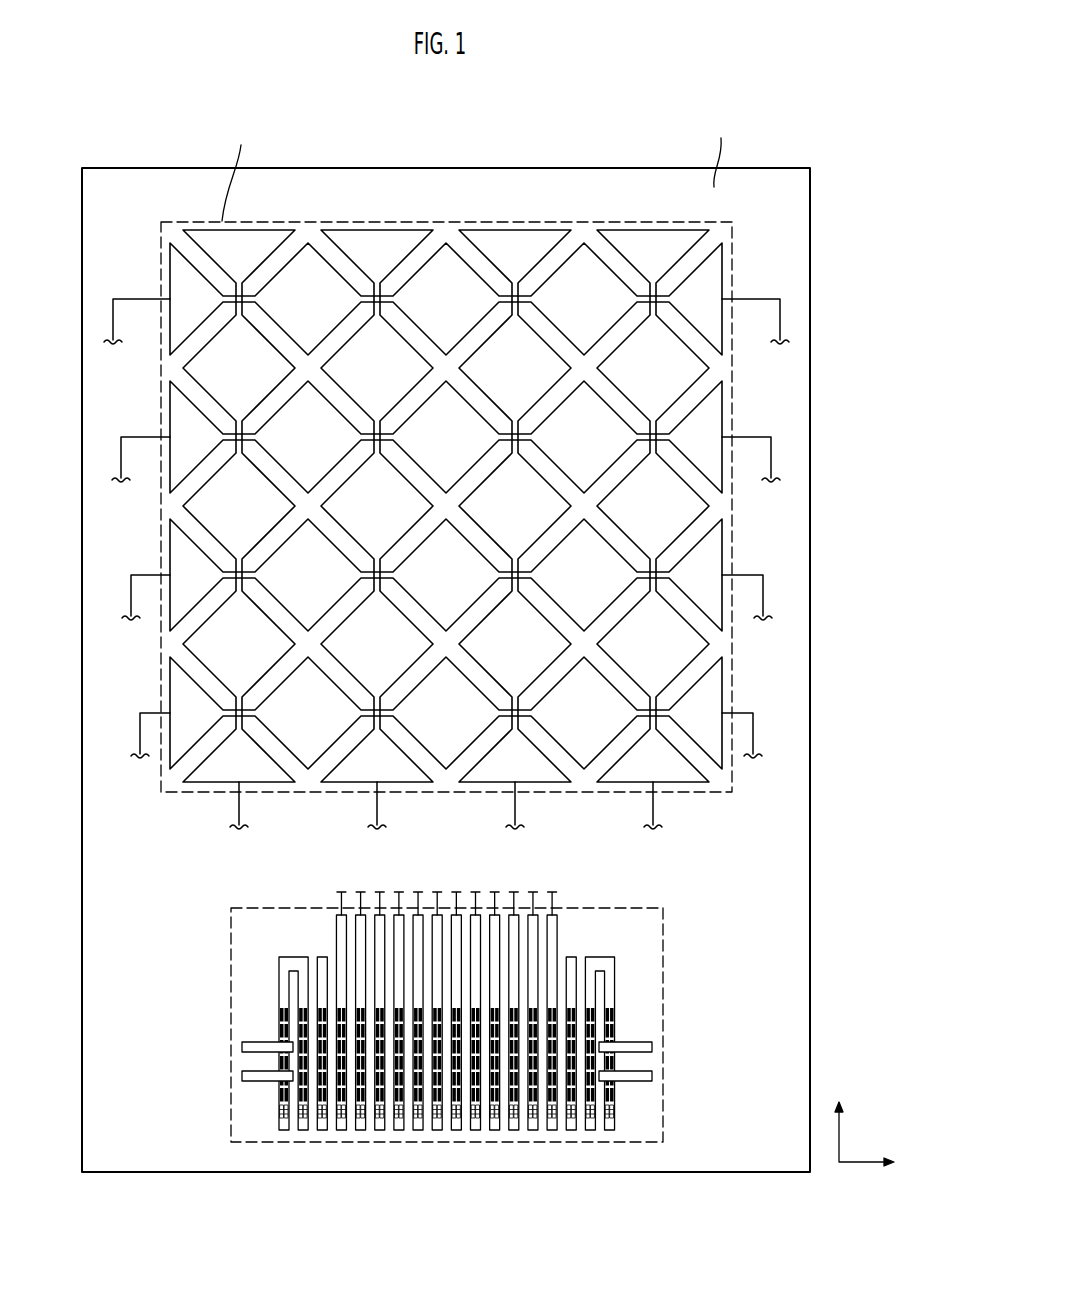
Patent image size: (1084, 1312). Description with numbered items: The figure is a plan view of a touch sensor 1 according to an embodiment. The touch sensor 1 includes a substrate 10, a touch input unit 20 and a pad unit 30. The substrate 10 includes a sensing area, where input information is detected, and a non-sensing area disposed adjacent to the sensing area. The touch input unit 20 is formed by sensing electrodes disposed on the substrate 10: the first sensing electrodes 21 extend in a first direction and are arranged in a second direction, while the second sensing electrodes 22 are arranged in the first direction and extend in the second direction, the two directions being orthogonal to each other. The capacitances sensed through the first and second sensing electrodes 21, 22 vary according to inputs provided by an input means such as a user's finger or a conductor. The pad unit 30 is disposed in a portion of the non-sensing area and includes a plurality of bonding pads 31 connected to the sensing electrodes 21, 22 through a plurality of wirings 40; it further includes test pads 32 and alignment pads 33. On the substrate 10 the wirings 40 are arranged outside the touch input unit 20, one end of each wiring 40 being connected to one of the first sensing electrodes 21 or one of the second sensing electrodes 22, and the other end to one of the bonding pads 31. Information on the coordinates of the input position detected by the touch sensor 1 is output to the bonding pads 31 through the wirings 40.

The touch sensor 1 is at (84, 99).
The substrate 10 is at (810, 206).
The touch input unit 20 is at (529, 450).
The first sensing electrodes 21 is at (713, 413).
The second sensing electrodes 22 is at (708, 507).
The pad unit 30 is at (514, 1056).
The bonding pads 31 is at (342, 1130).
The test pads 32 is at (283, 1130).
The alignment pads 33 is at (242, 1046).
The wirings 40 is at (763, 595).